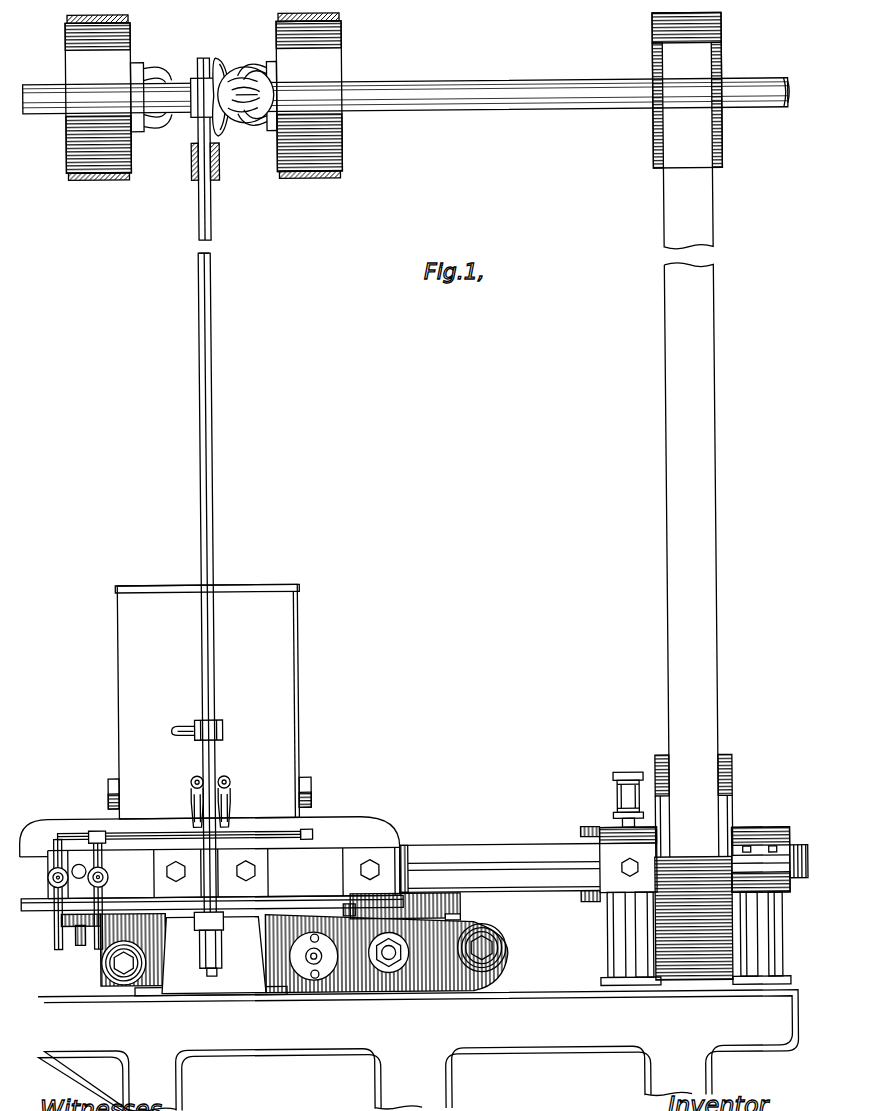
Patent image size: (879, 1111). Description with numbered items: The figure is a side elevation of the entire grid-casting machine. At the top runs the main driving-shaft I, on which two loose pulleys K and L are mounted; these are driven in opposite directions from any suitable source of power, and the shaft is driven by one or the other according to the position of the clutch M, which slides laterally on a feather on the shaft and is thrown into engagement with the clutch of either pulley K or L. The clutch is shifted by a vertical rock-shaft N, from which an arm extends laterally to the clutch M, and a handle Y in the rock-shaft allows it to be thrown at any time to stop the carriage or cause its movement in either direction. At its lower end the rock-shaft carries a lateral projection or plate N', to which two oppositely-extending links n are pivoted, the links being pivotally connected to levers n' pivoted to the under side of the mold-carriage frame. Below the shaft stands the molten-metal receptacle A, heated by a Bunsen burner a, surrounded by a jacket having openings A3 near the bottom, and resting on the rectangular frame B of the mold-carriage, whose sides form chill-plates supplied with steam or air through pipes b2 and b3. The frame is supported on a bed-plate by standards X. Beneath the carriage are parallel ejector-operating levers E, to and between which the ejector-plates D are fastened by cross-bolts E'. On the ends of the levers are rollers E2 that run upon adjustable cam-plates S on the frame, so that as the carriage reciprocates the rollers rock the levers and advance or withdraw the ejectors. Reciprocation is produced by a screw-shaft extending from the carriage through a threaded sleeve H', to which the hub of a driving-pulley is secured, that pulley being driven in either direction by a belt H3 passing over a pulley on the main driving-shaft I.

The main driving-shaft I is at (515, 84).
The loose pulley K is at (106, 97).
The loose pulley L is at (338, 72).
The clutch M is at (219, 57).
The vertical rock-shaft N is at (218, 583).
The molten-metal receptacle A is at (208, 701).
The handle Y is at (190, 718).
The Bunsen burner a is at (194, 775).
The openings A3 is at (321, 789).
The rectangular frame B is at (343, 827).
The pipe b2 is at (52, 921).
The pipe b3 is at (92, 948).
The links n is at (212, 891).
The levers n' is at (213, 915).
The cam-plate S is at (132, 942).
The roller E2 is at (106, 972).
The standard X is at (213, 955).
The lateral projection or plate N' is at (222, 944).
The ejector-operating lever E is at (386, 952).
The cross-bolt E' is at (310, 956).
The ejector-plate D is at (410, 913).
The threaded sleeve H' is at (613, 875).
The belt H3 is at (690, 496).